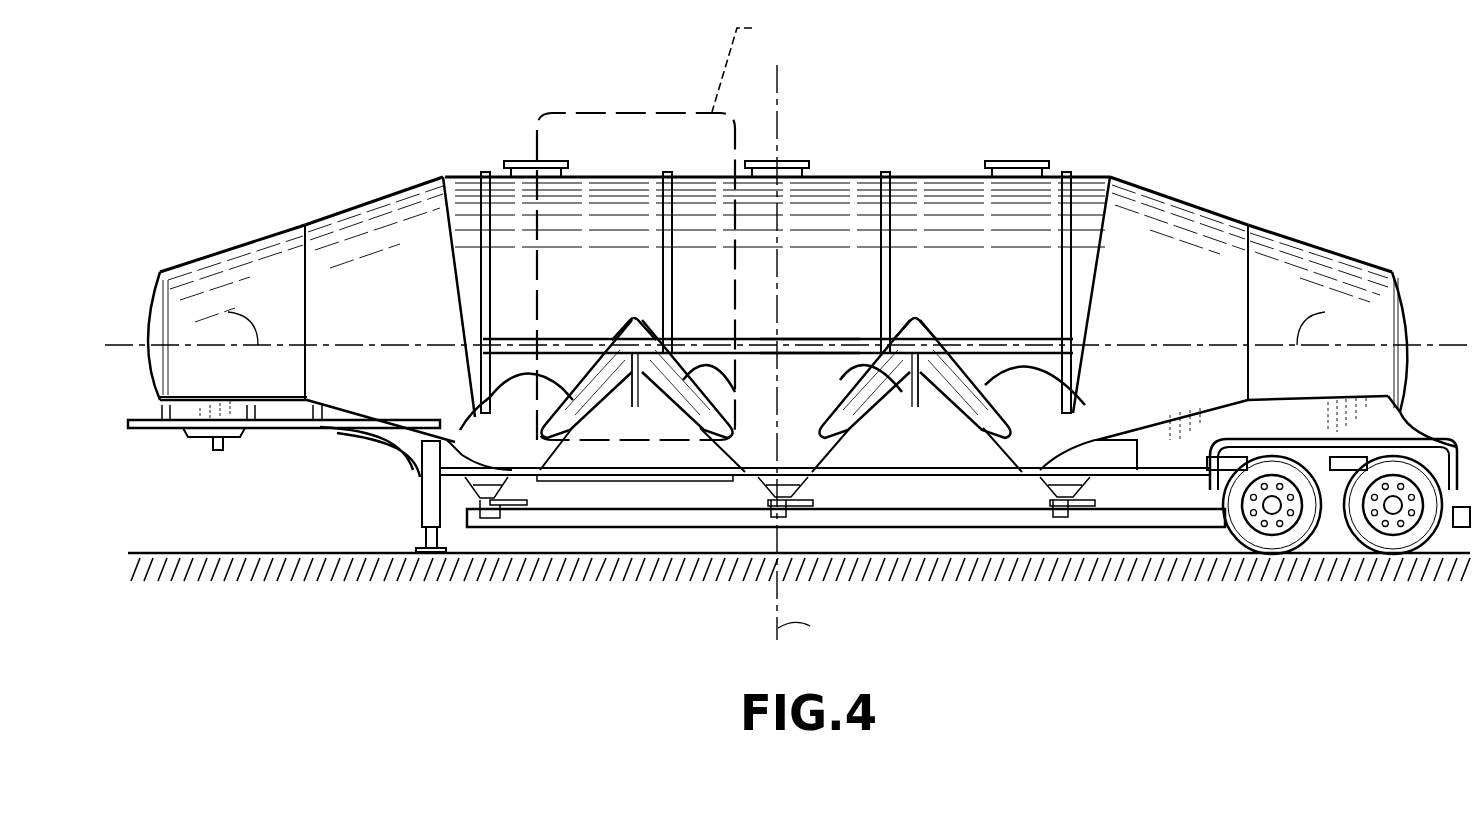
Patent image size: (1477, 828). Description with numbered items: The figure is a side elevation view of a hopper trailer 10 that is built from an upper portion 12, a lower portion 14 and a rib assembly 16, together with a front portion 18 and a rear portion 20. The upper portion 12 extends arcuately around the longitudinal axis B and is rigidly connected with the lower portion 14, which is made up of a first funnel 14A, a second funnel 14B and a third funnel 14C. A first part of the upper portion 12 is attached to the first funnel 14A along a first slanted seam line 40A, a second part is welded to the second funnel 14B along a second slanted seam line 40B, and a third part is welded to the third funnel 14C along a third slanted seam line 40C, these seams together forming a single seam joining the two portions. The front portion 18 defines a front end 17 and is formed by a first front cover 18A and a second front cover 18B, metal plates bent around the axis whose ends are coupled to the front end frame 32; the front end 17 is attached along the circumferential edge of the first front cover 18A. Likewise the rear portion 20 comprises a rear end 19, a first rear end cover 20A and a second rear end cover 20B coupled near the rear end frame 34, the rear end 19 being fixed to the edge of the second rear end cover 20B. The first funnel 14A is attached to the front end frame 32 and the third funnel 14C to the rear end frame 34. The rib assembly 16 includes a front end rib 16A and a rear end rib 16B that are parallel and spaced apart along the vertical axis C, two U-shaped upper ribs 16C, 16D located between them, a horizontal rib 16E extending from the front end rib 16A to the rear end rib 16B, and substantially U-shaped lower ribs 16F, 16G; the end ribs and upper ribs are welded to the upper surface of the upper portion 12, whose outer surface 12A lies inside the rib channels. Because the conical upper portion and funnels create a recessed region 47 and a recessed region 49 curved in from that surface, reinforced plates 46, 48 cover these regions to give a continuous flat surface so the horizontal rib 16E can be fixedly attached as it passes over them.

The hopper trailer 10 is at (1135, 120).
The upper portion 12 is at (950, 186).
The outer surface 12A is at (1017, 257).
The lower portion 14 is at (832, 552).
The first funnel 14A is at (573, 430).
The second funnel 14B is at (697, 430).
The third funnel 14C is at (983, 428).
The rib assembly 16 is at (774, 265).
The front end rib 16A is at (487, 172).
The rear end rib 16B is at (1067, 172).
The first upper rib 16C is at (667, 172).
The second upper rib 16D is at (887, 172).
The horizontal rib 16E is at (813, 340).
The first lower rib 16F is at (632, 408).
The second lower rib 16G is at (917, 408).
The front end 17 is at (140, 324).
The front portion 18 is at (285, 298).
The first front cover 18A is at (262, 233).
The second front cover 18B is at (360, 197).
The rear end 19 is at (1410, 325).
The rear portion 20 is at (1264, 297).
The first rear end cover 20A is at (1197, 198).
The second rear end cover 20B is at (1295, 232).
The front end frame 32 is at (275, 407).
The rear end frame 34 is at (1233, 417).
The first slanted seam line 40A is at (485, 392).
The second slanted seam line 40B is at (712, 370).
The third slanted seam line 40C is at (1080, 398).
The reinforced plate 46 is at (640, 333).
The recessed region 47 is at (612, 362).
The reinforced plate 48 is at (908, 330).
The recessed region 49 is at (940, 362).